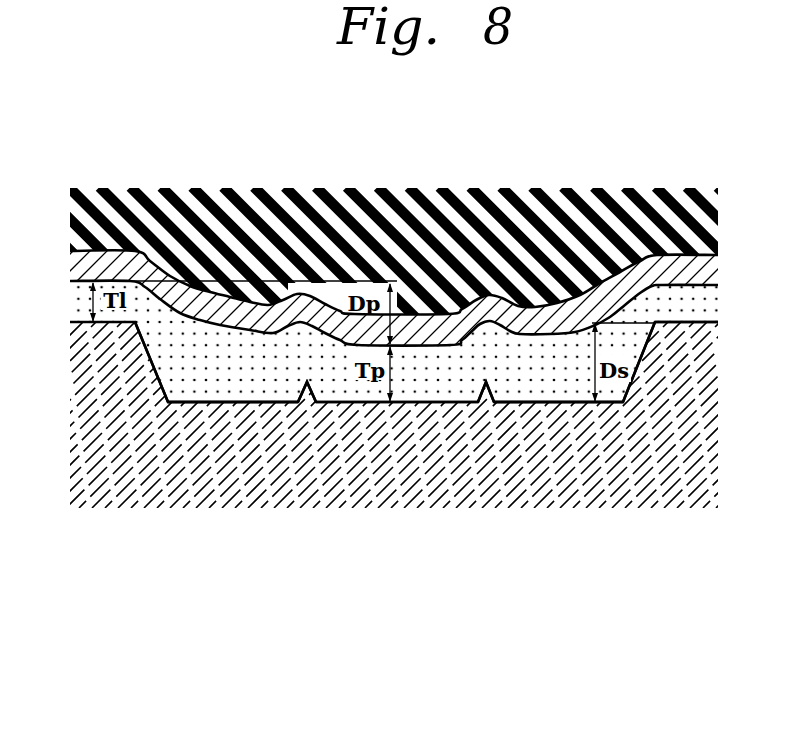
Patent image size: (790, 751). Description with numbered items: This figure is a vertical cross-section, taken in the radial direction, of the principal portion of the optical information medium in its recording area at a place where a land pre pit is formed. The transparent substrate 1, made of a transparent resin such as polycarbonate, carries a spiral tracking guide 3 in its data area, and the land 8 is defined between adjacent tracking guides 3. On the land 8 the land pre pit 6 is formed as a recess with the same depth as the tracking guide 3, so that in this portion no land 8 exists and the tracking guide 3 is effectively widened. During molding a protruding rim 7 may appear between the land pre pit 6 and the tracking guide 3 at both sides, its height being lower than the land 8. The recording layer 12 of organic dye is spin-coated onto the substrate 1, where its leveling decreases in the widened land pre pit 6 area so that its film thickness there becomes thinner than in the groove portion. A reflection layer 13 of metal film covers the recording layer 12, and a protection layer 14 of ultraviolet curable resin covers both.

The transparent substrate 1 is at (616, 468).
The tracking guide 3 is at (250, 403).
The land pre pit 6 is at (437, 403).
The protruding rim 7 is at (310, 392).
The land 8 is at (684, 322).
The recording layer 12 is at (203, 378).
The reflection layer 13 is at (664, 270).
The protection layer 14 is at (146, 197).